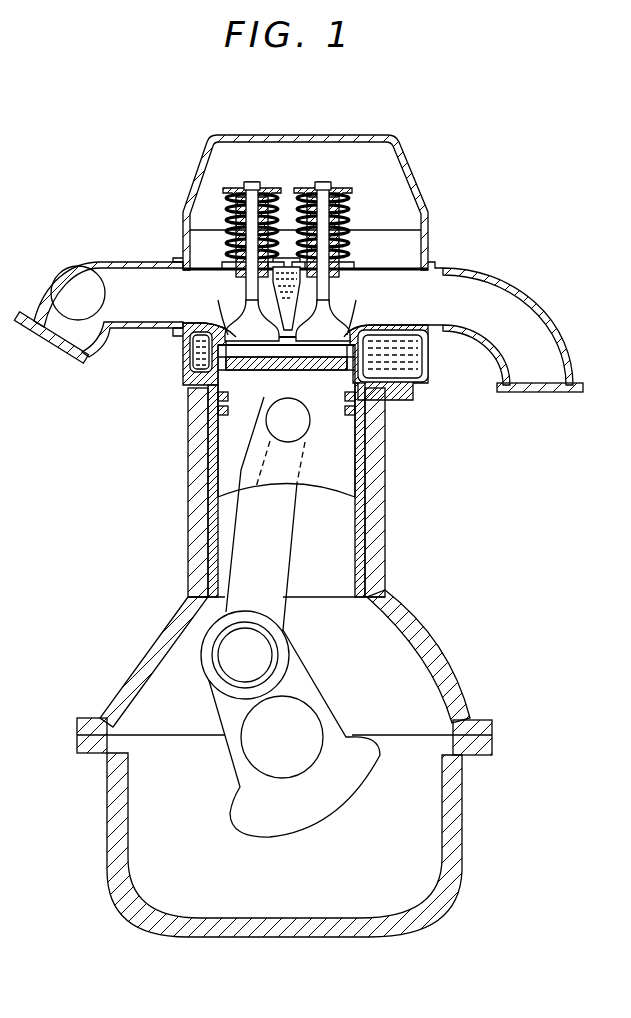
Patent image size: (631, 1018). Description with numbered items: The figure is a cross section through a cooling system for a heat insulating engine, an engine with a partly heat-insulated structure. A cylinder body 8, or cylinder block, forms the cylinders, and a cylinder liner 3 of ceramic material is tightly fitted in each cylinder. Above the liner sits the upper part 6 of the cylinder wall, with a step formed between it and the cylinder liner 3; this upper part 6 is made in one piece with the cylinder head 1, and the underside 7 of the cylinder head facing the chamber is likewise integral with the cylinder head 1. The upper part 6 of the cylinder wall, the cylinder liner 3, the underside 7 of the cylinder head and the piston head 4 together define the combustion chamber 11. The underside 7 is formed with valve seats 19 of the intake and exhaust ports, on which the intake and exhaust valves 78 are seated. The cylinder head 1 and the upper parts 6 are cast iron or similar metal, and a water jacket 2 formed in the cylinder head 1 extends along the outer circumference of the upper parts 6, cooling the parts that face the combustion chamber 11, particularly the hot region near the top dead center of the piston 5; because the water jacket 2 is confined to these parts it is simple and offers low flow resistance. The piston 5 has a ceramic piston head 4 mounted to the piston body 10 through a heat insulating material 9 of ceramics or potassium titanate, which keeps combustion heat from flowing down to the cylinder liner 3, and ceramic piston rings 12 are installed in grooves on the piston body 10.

The cylinder head 1 is at (425, 256).
The water jacket 2 is at (284, 283).
The cylinder liner 3 is at (211, 506).
The piston head 4 is at (263, 359).
The piston 5 is at (284, 434).
The upper part of cylinder wall 6 is at (208, 360).
The underside of cylinder head 7 is at (322, 321).
The cylinder body 8 is at (200, 466).
The heat insulating material 9 is at (317, 367).
The piston body 10 is at (233, 493).
The combustion chamber 11 is at (296, 352).
The piston rings 12 is at (222, 402).
The valve seats 19 is at (221, 327).
The intake and exhaust valves 78 is at (250, 312).